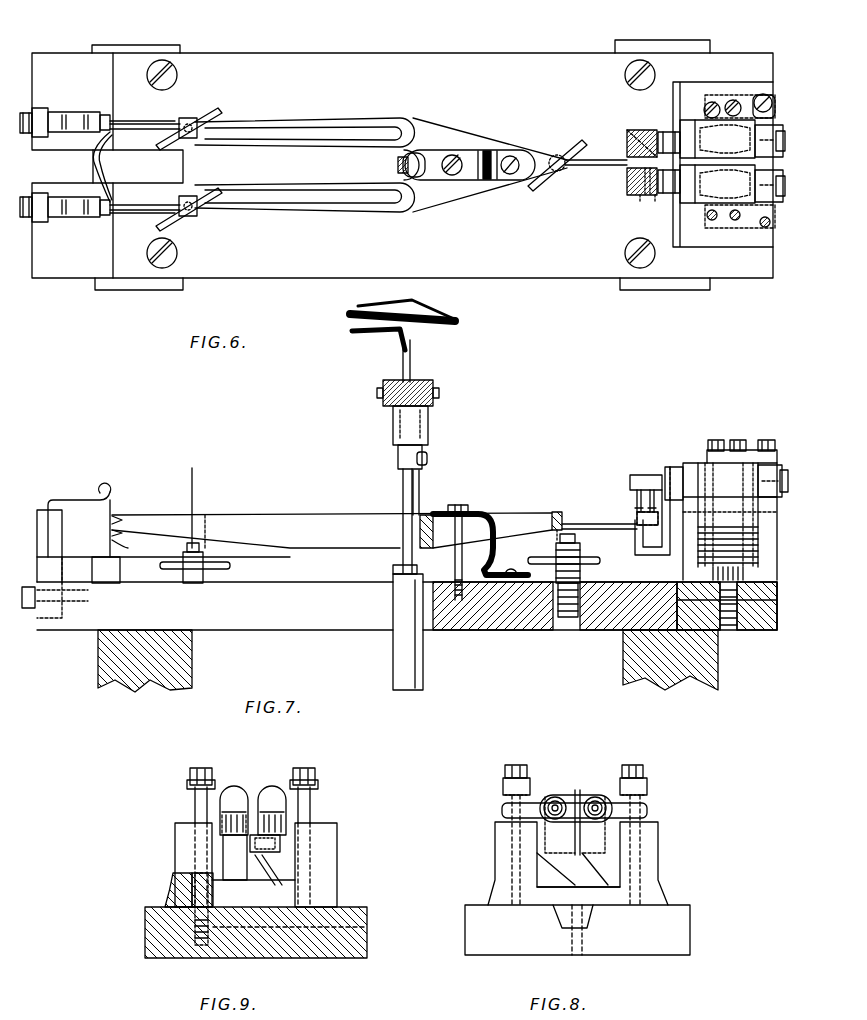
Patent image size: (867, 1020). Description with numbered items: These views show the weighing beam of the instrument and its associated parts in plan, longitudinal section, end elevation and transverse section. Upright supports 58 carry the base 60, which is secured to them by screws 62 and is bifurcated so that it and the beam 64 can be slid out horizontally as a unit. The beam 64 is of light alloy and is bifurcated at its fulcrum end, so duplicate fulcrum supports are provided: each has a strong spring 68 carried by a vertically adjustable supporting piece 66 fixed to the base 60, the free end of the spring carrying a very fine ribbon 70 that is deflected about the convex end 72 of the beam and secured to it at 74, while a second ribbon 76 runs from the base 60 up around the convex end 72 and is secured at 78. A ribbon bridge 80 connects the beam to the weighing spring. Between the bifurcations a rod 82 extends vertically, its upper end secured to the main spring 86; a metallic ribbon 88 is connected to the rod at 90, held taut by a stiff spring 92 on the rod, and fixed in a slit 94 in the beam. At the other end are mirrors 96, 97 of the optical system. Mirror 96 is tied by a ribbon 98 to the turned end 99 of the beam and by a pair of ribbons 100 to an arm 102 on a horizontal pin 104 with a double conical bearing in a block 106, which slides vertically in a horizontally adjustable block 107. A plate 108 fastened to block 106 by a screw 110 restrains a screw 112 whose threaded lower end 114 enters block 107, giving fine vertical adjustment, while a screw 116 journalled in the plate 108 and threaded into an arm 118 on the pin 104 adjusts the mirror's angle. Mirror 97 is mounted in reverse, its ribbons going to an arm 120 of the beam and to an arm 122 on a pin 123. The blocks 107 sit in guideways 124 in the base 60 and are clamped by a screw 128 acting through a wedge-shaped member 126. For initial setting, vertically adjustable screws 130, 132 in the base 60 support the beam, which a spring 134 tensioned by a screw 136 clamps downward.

In FIG. 6, the upright supports 58 is at (140, 290).
In FIG. 7, the upright supports 58 is at (192, 650).
In FIG. 6, the base 60 is at (412, 58).
In FIG. 7, the base 60 is at (300, 598).
In FIG. 9, the base 60 is at (367, 932).
In FIG. 8, the base 60 is at (690, 928).
In FIG. 6, the screws 62 is at (174, 68).
In FIG. 6, the beam 64 is at (428, 200).
In FIG. 7, the beam 64 is at (300, 515).
In FIG. 6, the vertically adjustable supporting piece 66 is at (40, 200).
In FIG. 7, the vertically adjustable supporting piece 66 is at (42, 510).
In FIG. 6, the strong spring 68 is at (74, 110).
In FIG. 7, the strong spring 68 is at (80, 500).
In FIG. 6, the ribbon 70 is at (108, 115).
In FIG. 7, the ribbon 70 is at (118, 488).
In FIG. 7, the convex end of the beam 72 is at (111, 520).
In FIG. 7, the securing point 74 is at (118, 542).
In FIG. 6, the second ribbon 76 is at (112, 138).
In FIG. 7, the second ribbon 76 is at (112, 545).
In FIG. 7, the securing point 78 is at (114, 520).
In FIG. 7, the ribbon bridge 80 is at (194, 496).
In FIG. 6, the rod 82 is at (398, 165).
In FIG. 7, the rod 82 is at (403, 510).
In FIG. 7, the main spring 86 is at (430, 328).
In FIG. 7, the metallic ribbon 88 is at (420, 492).
In FIG. 7, the connection point 90 is at (428, 455).
In FIG. 7, the stiff spring 92 is at (420, 550).
In FIG. 6, the slit 94 is at (418, 155).
In FIG. 6, the mirror 96 is at (627, 140).
In FIG. 7, the mirror 96 is at (640, 478).
In FIG. 9, the mirror 96 is at (234, 788).
In FIG. 6, the mirror 97 is at (627, 180).
In FIG. 9, the mirror 97 is at (272, 788).
In FIG. 7, the metallic ribbon 98 is at (652, 490).
In FIG. 6, the turned end of the beam 99 is at (650, 133).
In FIG. 9, the turned end of the beam 99 is at (223, 842).
In FIG. 7, the pair of ribbons 100 is at (636, 506).
In FIG. 9, the pair of ribbons 100 is at (225, 820).
In FIG. 7, the arm 102 is at (638, 546).
In FIG. 9, the arm 102 is at (222, 880).
In FIG. 8, the arm 102 is at (578, 889).
In FIG. 6, the pin 104 is at (668, 132).
In FIG. 7, the pin 104 is at (675, 470).
In FIG. 6, the block 106 is at (700, 205).
In FIG. 7, the block 106 is at (700, 545).
In FIG. 9, the block 106 is at (290, 870).
In FIG. 8, the block 106 is at (583, 797).
In FIG. 6, the horizontally adjustable block 107 is at (748, 85).
In FIG. 7, the horizontally adjustable block 107 is at (730, 521).
In FIG. 9, the horizontally adjustable block 107 is at (330, 855).
In FIG. 8, the horizontally adjustable block 107 is at (658, 850).
In FIG. 6, the plate 108 is at (740, 106).
In FIG. 7, the plate 108 is at (745, 450).
In FIG. 9, the plate 108 is at (187, 784).
In FIG. 8, the plate 108 is at (503, 784).
In FIG. 6, the screw 110 is at (734, 100).
In FIG. 7, the screw 110 is at (738, 440).
In FIG. 6, the screw 112 is at (712, 102).
In FIG. 7, the screw 112 is at (715, 440).
In FIG. 9, the screw 112 is at (195, 770).
In FIG. 9, the threaded lower end 114 is at (195, 915).
In FIG. 6, the screw 116 is at (770, 100).
In FIG. 7, the screw 116 is at (769, 448).
In FIG. 8, the screw 116 is at (512, 765).
In FIG. 6, the arm 118 is at (770, 135).
In FIG. 7, the arm 118 is at (776, 497).
In FIG. 8, the arm 118 is at (505, 805).
In FIG. 6, the arm of the beam 120 is at (627, 190).
In FIG. 7, the arm of the beam 120 is at (636, 518).
In FIG. 9, the arm of the beam 120 is at (268, 838).
In FIG. 6, the arm 122 is at (645, 200).
In FIG. 9, the arm 122 is at (265, 878).
In FIG. 8, the arm 122 is at (537, 860).
In FIG. 6, the pin 123 is at (660, 200).
In FIG. 9, the guideways 124 is at (170, 880).
In FIG. 8, the guideways 124 is at (668, 903).
In FIG. 7, the wedge-shaped member 126 is at (775, 580).
In FIG. 8, the wedge-shaped member 126 is at (560, 905).
In FIG. 7, the screw 128 is at (735, 628).
In FIG. 6, the vertically adjustable screw 130 is at (190, 118).
In FIG. 7, the vertically adjustable screw 130 is at (198, 548).
In FIG. 6, the vertically adjustable screw 132 is at (558, 155).
In FIG. 7, the vertically adjustable screw 132 is at (553, 515).
In FIG. 6, the spring 134 is at (488, 180).
In FIG. 7, the spring 134 is at (490, 510).
In FIG. 6, the screw 136 is at (456, 160).
In FIG. 7, the screw 136 is at (460, 503).